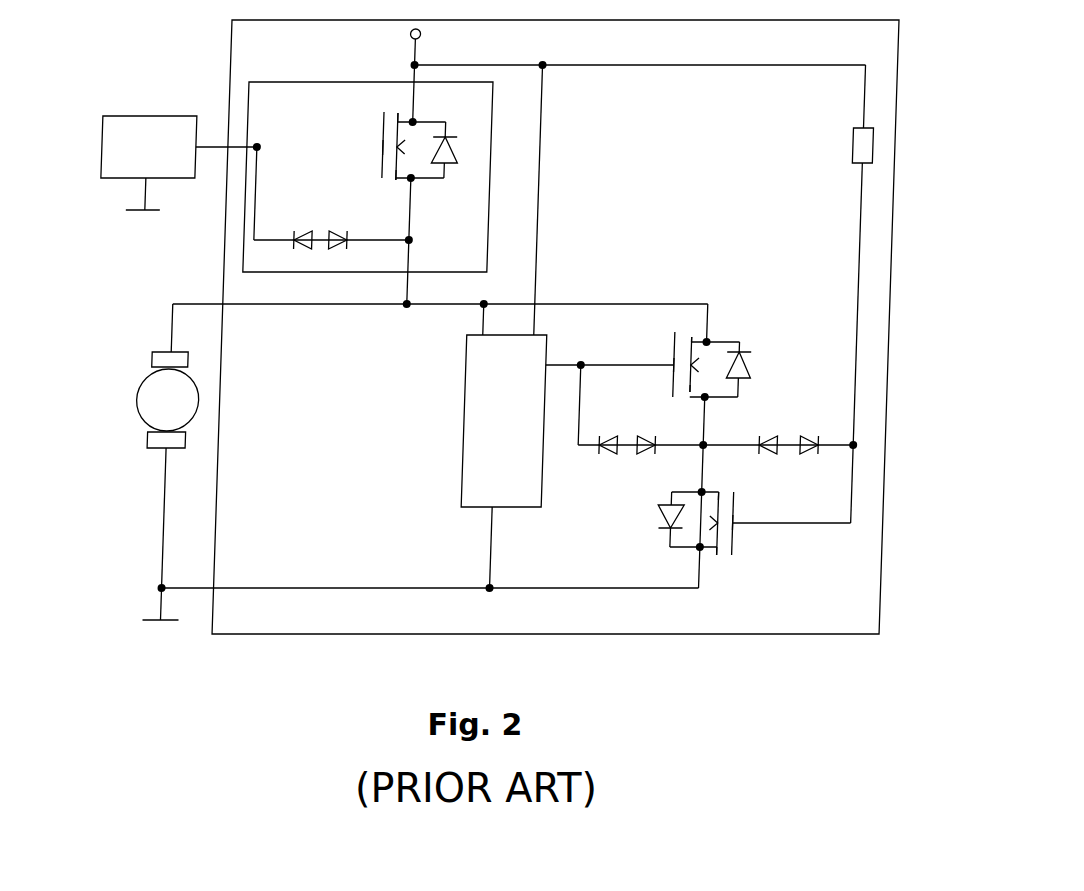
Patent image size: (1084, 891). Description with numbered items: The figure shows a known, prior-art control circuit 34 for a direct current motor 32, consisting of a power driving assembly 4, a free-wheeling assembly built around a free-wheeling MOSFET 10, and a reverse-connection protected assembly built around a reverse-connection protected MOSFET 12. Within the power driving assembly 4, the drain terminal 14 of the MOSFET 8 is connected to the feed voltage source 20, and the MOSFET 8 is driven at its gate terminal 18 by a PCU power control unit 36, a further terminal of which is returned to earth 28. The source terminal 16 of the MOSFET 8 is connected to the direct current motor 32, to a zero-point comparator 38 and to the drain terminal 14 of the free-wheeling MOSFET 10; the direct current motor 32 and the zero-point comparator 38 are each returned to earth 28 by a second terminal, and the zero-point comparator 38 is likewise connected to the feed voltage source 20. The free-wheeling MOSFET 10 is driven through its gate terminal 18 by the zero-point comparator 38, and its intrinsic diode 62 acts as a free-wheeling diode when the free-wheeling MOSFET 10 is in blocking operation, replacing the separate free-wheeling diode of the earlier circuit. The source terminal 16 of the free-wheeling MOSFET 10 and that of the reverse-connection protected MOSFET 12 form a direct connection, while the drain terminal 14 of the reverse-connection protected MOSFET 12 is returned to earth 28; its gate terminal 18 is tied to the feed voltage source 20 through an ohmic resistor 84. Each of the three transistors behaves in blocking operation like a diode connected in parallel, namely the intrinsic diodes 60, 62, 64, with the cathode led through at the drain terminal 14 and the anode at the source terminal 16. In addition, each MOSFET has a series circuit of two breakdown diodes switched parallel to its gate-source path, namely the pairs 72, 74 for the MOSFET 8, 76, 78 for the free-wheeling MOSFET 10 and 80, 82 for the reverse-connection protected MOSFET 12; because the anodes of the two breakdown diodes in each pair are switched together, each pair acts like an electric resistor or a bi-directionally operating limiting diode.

The power driving assembly 4 is at (292, 82).
The MOSFET 8 is at (437, 121).
The free-wheeling MOSFET 10 is at (725, 342).
The reverse-connection protected MOSFET 12 is at (684, 492).
The drain terminal 14 is at (400, 114).
The source terminal 16 is at (401, 180).
The gate terminal 18 is at (385, 128).
The feed voltage source 20 is at (411, 36).
The earth 28 is at (166, 210).
The direct current motor 32 is at (189, 440).
The control circuit 34 is at (900, 185).
The PCU power control unit 36 is at (202, 163).
The zero-point comparator 38 is at (541, 507).
The intrinsic diode 60 is at (456, 147).
The intrinsic diode 62 is at (763, 355).
The intrinsic diode 64 is at (677, 524).
The breakdown diode 72 is at (300, 240).
The breakdown diode 74 is at (342, 240).
The breakdown diode 76 is at (618, 437).
The breakdown diode 78 is at (655, 437).
The breakdown diode 80 is at (780, 437).
The breakdown diode 82 is at (822, 437).
The ohmic resistor 84 is at (859, 140).